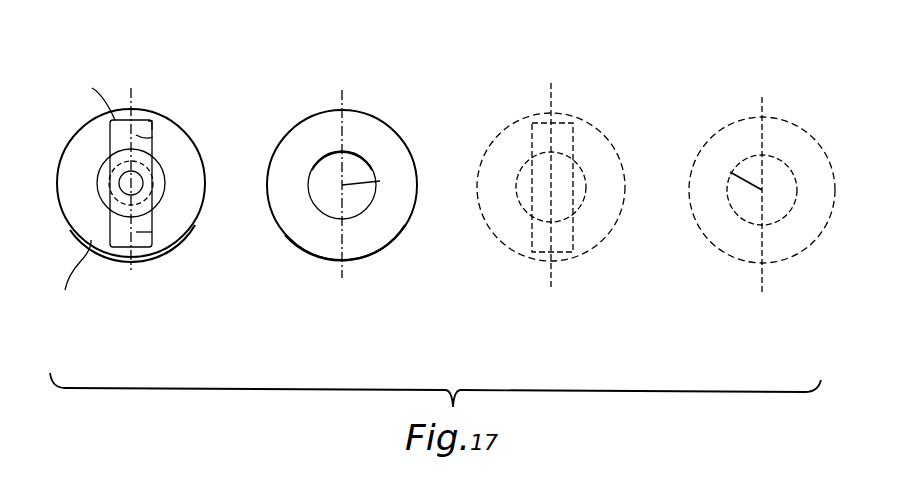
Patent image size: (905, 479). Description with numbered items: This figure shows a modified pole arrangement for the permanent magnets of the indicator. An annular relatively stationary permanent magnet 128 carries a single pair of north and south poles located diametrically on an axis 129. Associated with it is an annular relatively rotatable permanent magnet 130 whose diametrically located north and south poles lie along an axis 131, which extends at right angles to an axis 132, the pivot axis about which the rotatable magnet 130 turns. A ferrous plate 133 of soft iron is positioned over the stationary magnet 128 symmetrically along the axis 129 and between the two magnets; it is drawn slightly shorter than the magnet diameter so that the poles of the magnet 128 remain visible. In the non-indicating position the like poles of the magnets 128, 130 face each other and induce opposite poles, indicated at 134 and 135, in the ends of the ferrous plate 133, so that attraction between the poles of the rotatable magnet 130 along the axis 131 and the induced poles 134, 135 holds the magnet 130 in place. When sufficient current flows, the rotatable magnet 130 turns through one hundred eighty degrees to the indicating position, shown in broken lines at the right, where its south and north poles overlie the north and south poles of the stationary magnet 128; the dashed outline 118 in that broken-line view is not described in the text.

The housing 118 is at (500, 230).
The relatively stationary permanent magnet 128 is at (73, 216).
The axis 129 is at (132, 103).
The relatively rotatable permanent magnet 130 is at (296, 236).
The axis 131 is at (344, 97).
The pivot axis 132 is at (380, 181).
The ferrous plate 133 is at (152, 125).
The induced pole 134 is at (153, 137).
The induced pole 135 is at (152, 232).